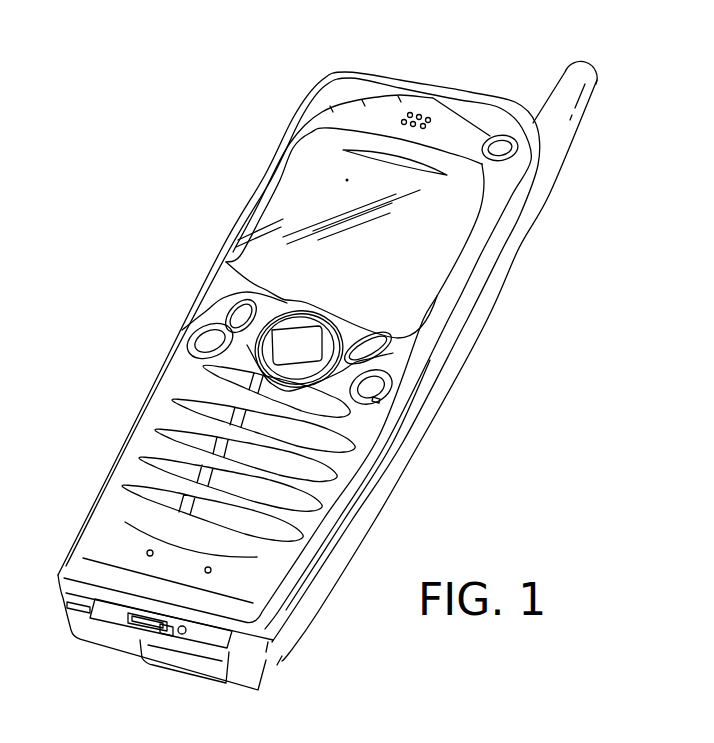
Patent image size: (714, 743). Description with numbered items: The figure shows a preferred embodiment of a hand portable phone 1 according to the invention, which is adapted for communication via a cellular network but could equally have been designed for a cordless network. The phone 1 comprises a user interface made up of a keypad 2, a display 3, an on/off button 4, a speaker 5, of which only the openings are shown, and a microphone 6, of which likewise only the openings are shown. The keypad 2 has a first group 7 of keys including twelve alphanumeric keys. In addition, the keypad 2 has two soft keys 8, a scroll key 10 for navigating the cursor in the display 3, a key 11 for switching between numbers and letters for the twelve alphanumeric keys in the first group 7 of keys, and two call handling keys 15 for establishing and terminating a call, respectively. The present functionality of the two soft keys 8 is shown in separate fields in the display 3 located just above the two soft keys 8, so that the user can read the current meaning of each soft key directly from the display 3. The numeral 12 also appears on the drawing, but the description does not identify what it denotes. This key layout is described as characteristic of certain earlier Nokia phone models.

The phone 1 is at (172, 270).
The keypad 2 is at (482, 362).
The display 3 is at (424, 283).
The on/off button 4 is at (513, 149).
The speaker 5 is at (433, 111).
The microphone 6 is at (236, 586).
The first group of keys 7 is at (147, 373).
The soft keys 8 is at (225, 297).
The scroll key 10 is at (280, 302).
The key for switching between numbers and letters 11 is at (378, 387).
The clear key 12 is at (188, 331).
The call handling keys 15 is at (200, 369).